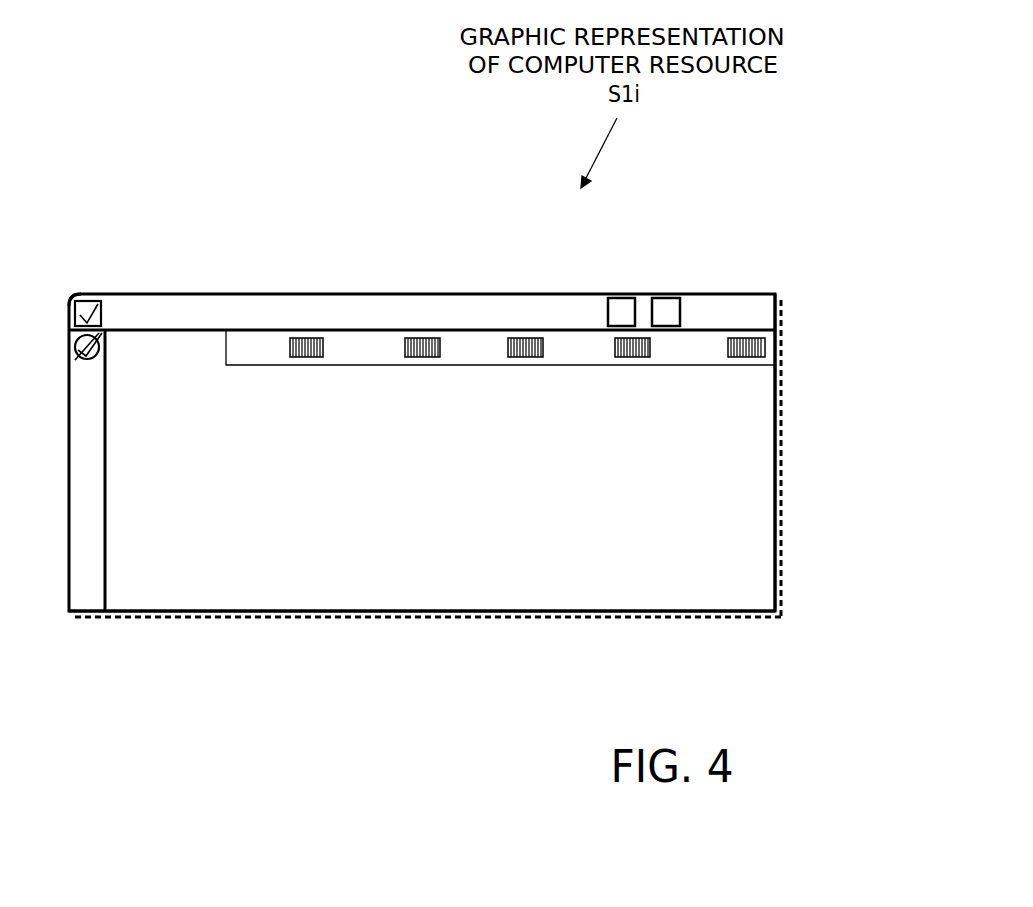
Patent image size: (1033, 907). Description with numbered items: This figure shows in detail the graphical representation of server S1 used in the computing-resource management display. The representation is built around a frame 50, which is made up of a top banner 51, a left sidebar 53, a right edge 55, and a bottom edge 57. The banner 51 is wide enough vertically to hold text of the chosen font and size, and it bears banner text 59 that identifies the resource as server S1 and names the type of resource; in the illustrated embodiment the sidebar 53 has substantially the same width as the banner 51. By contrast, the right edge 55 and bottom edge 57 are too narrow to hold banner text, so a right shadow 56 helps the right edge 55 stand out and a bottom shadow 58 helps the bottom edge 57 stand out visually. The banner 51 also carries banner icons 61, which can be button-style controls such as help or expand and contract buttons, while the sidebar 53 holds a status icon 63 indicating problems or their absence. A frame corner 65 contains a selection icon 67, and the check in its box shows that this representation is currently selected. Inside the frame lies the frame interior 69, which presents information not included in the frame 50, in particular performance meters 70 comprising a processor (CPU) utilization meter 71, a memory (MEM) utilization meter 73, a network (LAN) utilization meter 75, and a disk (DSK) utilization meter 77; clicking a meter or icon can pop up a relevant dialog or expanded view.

The frame 50 is at (773, 600).
The top banner 51 is at (586, 324).
The left sidebar 53 is at (101, 425).
The right edge 55 is at (775, 588).
The right shadow 56 is at (781, 592).
The bottom edge 57 is at (282, 610).
The bottom shadow 58 is at (240, 619).
The banner text 59 is at (390, 310).
The banner icons 61 is at (753, 214).
The status icon 63 is at (74, 338).
The frame corner 65 is at (75, 297).
The selection icon 67 is at (100, 302).
The frame interior 69 is at (625, 479).
The performance meters 70 is at (477, 365).
The processor (CPU) utilization meter 71 is at (308, 357).
The memory (MEM) utilization meter 73 is at (422, 357).
The network (LAN) utilization meter 75 is at (540, 357).
The disk (DSK) utilization meter 77 is at (737, 357).